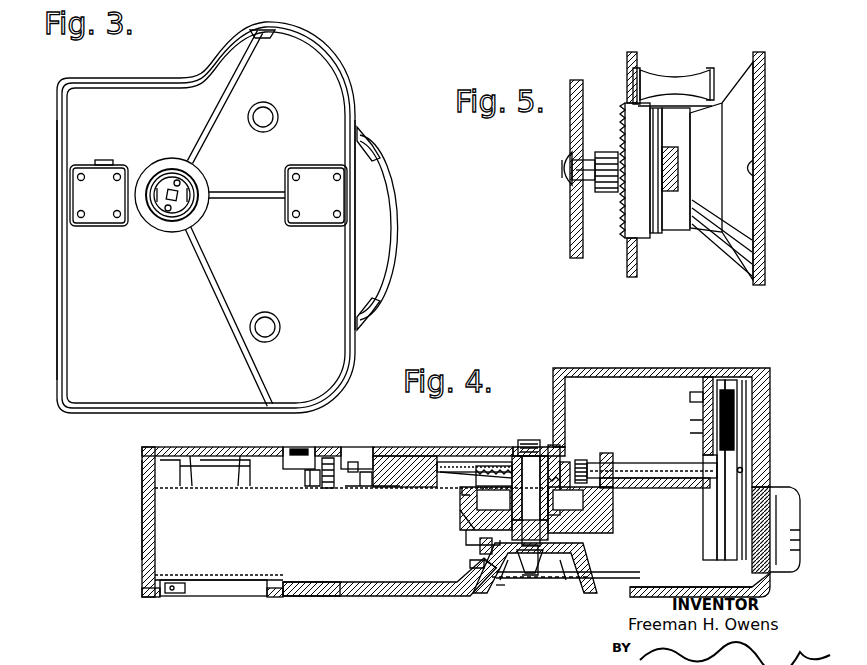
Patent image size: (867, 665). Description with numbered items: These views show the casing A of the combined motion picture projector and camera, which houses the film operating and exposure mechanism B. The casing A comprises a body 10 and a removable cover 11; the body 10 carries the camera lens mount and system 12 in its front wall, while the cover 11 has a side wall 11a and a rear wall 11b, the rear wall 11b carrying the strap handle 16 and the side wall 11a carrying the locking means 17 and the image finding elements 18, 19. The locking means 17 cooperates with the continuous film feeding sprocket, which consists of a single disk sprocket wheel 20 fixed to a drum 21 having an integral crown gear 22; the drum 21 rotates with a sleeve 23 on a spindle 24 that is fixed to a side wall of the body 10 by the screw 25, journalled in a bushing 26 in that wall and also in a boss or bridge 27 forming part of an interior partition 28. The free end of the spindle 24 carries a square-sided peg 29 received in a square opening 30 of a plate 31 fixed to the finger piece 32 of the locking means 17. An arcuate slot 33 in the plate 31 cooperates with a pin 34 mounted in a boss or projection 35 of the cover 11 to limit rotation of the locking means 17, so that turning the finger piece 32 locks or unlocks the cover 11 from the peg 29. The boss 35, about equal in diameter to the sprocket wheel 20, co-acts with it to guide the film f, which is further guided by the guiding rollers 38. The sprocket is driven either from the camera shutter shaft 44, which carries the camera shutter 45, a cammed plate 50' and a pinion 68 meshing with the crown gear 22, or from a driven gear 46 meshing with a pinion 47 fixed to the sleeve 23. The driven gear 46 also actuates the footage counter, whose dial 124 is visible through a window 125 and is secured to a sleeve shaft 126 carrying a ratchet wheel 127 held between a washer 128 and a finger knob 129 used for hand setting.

In FIG. 5, the body 10 is at (573, 225).
In FIG. 3, the removable cover 11 is at (316, 266).
In FIG. 5, the removable cover 11 is at (766, 121).
In FIG. 4, the removable cover 11 is at (420, 597).
In FIG. 3, the side wall 11a is at (77, 303).
In FIG. 3, the rear wall 11b is at (354, 108).
In FIG. 4, the rear wall 11b is at (331, 613).
In FIG. 4, the camera lens mount and system 12 is at (787, 490).
In FIG. 3, the strap handle 16 is at (397, 179).
In FIG. 4, the locking means 17 is at (500, 586).
In FIG. 4, the image finding element 18 is at (211, 597).
In FIG. 4, the image finding element 19 is at (635, 596).
In FIG. 5, the sprocket wheel 20 is at (656, 228).
In FIG. 4, the sprocket wheel 20 is at (462, 512).
In FIG. 5, the drum 21 is at (641, 240).
In FIG. 4, the drum 21 is at (462, 490).
In FIG. 5, the crown gear 22 is at (621, 239).
In FIG. 4, the crown gear 22 is at (568, 478).
In FIG. 4, the sleeve 23 is at (565, 462).
In FIG. 4, the spindle 24 is at (530, 500).
In FIG. 5, the screw 25 is at (563, 174).
In FIG. 4, the screw 25 is at (526, 440).
In FIG. 5, the bushing 26 is at (588, 156).
In FIG. 4, the bushing 26 is at (518, 452).
In FIG. 5, the boss or bridge 27 is at (670, 194).
In FIG. 4, the boss or bridge 27 is at (613, 523).
In FIG. 4, the interior partition 28 is at (640, 488).
In FIG. 4, the square-sided peg 29 is at (525, 576).
In FIG. 3, the square opening 30 is at (181, 220).
In FIG. 4, the square opening 30 is at (507, 580).
In FIG. 3, the plate 31 is at (160, 213).
In FIG. 4, the plate 31 is at (546, 566).
In FIG. 4, the finger piece 32 is at (485, 582).
In FIG. 3, the arcuate slot 33 is at (199, 193).
In FIG. 4, the arcuate slot 33 is at (480, 546).
In FIG. 3, the pin 34 is at (198, 184).
In FIG. 4, the pin 34 is at (472, 562).
In FIG. 3, the boss or projection 35 is at (170, 170).
In FIG. 5, the boss or projection 35 is at (708, 120).
In FIG. 4, the boss or projection 35 is at (585, 555).
In FIG. 5, the guiding roller 38 is at (647, 70).
In FIG. 4, the guiding roller 38 is at (465, 545).
In FIG. 4, the camera shutter shaft 44 is at (640, 466).
In FIG. 4, the camera shutter 45 is at (738, 445).
In FIG. 4, the driven gear 46 is at (447, 462).
In FIG. 5, the pinion 47 is at (604, 150).
In FIG. 4, the pinion 47 is at (500, 468).
In FIG. 4, the cammed plate 50' is at (771, 470).
In FIG. 5, the pinion 68 is at (604, 200).
In FIG. 4, the pinion 68 is at (584, 470).
In FIG. 4, the dial 124 is at (298, 446).
In FIG. 4, the window 125 is at (363, 450).
In FIG. 4, the sleeve shaft 126 is at (312, 484).
In FIG. 4, the ratchet wheel 127 is at (368, 486).
In FIG. 4, the washer 128 is at (224, 471).
In FIG. 4, the finger knob 129 is at (317, 490).
In FIG. 4, the casing A is at (714, 369).
In FIG. 4, the film operating and exposure mechanism B is at (562, 468).
In FIG. 5, the film f is at (673, 104).